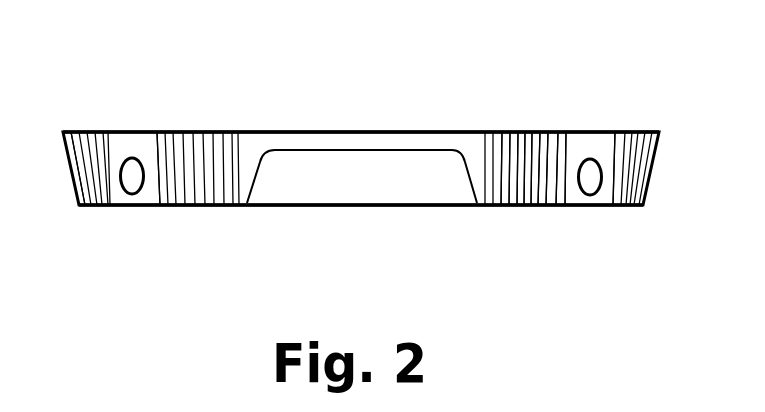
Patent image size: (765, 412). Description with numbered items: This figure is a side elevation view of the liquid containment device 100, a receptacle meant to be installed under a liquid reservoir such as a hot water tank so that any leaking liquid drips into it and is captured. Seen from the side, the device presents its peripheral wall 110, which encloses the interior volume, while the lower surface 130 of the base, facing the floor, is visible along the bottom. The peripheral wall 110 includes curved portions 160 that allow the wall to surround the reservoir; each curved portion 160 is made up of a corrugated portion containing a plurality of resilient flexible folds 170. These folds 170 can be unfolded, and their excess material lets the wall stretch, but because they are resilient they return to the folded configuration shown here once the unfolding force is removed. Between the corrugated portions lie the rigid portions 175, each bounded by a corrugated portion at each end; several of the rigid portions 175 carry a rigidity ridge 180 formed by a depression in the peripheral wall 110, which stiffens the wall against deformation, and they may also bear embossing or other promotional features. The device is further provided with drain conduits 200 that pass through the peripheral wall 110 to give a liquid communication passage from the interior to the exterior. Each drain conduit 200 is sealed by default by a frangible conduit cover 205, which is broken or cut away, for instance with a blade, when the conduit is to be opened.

The liquid containment device 100 is at (510, 38).
The peripheral wall 110 is at (423, 137).
The lower surface 130 is at (397, 212).
The curved portion 160 is at (232, 208).
The resilient flexible folds 170 is at (560, 136).
The rigid portions 175 is at (115, 131).
The rigidity ridge 180 is at (100, 207).
The drain conduits 200 is at (137, 158).
The conduit cover 205 is at (128, 206).